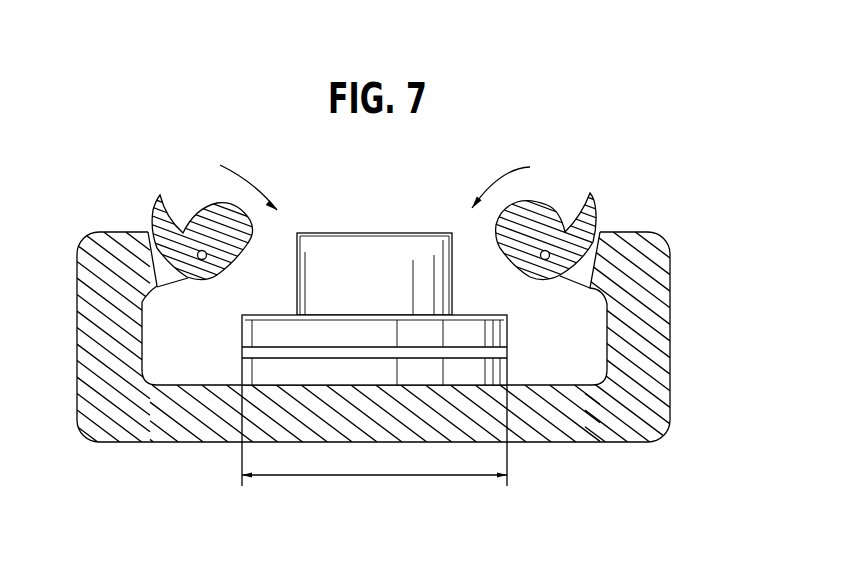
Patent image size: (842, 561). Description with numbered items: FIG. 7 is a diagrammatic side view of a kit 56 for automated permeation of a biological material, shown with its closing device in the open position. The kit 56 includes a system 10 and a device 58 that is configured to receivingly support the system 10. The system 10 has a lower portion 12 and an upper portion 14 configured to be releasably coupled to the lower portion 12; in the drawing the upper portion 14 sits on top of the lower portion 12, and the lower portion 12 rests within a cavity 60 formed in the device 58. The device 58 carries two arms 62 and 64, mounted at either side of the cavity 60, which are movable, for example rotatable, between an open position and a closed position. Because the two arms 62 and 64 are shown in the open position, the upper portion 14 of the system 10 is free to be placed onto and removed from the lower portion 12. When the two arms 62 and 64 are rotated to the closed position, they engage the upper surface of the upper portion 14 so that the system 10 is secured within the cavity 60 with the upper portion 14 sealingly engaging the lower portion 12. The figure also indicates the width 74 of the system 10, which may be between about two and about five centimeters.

The system 10 is at (405, 274).
The lower portion 12 is at (508, 362).
The upper portion 14 is at (452, 289).
The kit 56 is at (627, 172).
The device 58 is at (399, 351).
The cavity 60 is at (575, 367).
The arm 62 is at (207, 203).
The arm 64 is at (533, 203).
The width 74 is at (400, 475).